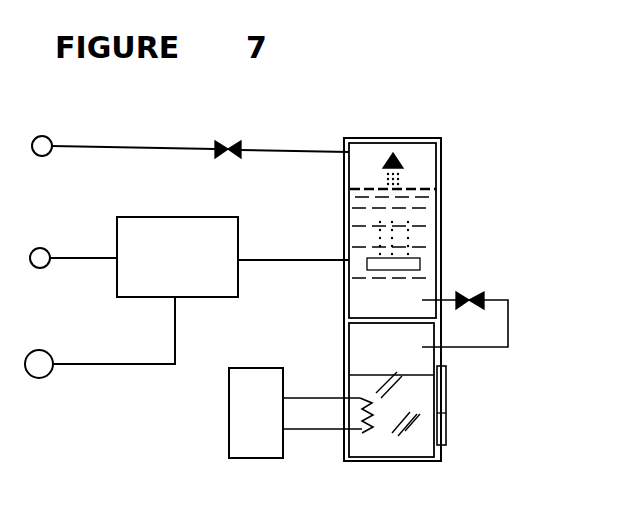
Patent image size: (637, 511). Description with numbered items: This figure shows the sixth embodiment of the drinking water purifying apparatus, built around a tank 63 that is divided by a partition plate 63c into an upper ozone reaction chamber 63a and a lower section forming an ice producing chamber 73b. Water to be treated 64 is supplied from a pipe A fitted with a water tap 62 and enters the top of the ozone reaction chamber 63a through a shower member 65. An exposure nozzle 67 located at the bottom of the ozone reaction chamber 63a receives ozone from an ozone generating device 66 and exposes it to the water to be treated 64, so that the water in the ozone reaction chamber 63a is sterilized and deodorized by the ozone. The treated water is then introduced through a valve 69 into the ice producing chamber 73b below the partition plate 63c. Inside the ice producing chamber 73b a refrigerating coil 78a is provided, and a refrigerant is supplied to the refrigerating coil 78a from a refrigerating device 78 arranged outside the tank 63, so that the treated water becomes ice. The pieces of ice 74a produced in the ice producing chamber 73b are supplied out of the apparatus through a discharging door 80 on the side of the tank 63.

The pipe A is at (118, 143).
The water tap 62 is at (231, 143).
The tank 63 is at (450, 148).
The ozone reaction chamber 63a is at (348, 197).
The partition plate 63c is at (356, 312).
The water to be treated 64 is at (357, 233).
The shower member 65 is at (393, 152).
The ozone generating device 66 is at (168, 240).
The exposure nozzle 67 is at (420, 264).
The valve 69 is at (472, 292).
The ice producing chamber 73b is at (345, 352).
The pieces of ice 74a is at (405, 435).
The refrigerating device 78 is at (256, 440).
The refrigerating coil 78a is at (366, 440).
The discharging door 80 is at (447, 401).